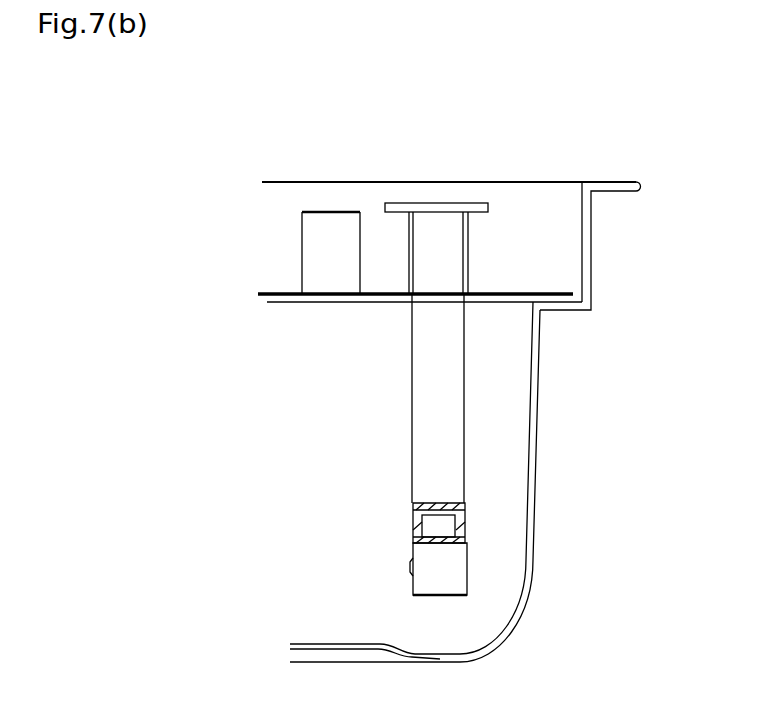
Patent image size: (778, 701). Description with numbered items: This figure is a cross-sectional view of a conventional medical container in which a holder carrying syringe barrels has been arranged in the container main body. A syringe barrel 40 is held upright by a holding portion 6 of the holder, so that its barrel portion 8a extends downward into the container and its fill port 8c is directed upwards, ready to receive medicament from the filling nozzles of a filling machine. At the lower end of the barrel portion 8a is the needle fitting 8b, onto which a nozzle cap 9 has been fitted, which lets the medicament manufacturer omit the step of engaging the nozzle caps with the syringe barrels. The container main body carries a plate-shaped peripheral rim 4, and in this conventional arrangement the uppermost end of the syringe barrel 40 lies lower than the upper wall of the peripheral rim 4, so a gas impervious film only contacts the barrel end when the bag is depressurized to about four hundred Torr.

The peripheral rim 4 is at (613, 182).
The holding portion 6 is at (320, 210).
The barrel portion of syringe barrel 8a is at (438, 432).
The needle fitting 8b is at (412, 520).
The fill port of syringe barrel 8c is at (437, 203).
The nozzle cap 9 is at (413, 568).
The syringe barrel 40 is at (402, 374).